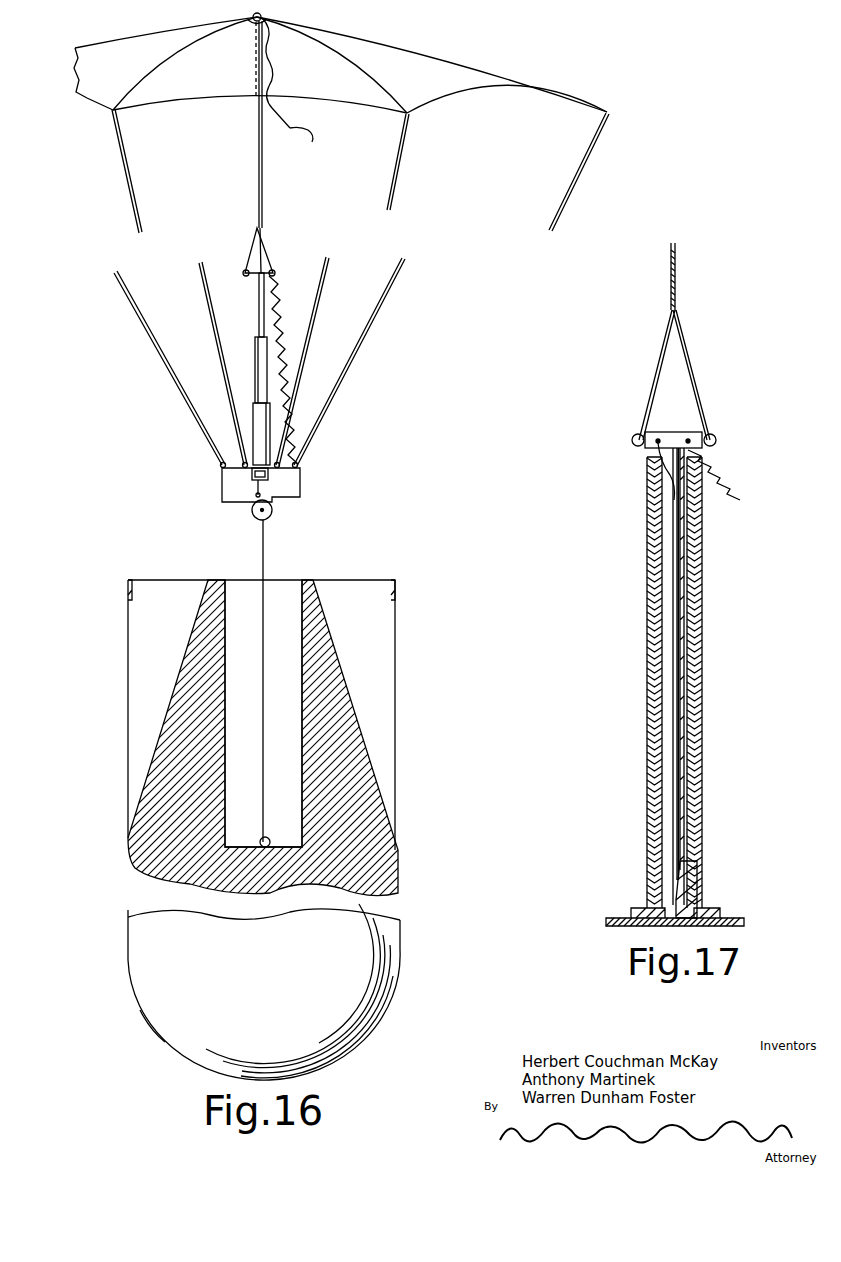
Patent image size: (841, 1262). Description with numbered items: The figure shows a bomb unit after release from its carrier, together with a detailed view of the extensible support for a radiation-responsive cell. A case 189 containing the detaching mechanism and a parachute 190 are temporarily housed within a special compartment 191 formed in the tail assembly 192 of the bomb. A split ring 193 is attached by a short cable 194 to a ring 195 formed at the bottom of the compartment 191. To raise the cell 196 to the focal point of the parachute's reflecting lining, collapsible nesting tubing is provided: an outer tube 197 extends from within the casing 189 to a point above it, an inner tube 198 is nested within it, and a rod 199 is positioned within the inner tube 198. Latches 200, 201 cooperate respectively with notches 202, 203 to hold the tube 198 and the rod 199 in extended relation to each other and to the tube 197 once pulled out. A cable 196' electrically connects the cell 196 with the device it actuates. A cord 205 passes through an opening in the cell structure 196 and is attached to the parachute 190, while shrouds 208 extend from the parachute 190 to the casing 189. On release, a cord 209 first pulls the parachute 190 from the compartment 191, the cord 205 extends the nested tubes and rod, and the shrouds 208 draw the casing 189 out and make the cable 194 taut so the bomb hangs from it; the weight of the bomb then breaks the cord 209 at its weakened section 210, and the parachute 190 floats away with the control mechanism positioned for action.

In FIG. 16, the case 189 is at (261, 485).
In FIG. 16, the parachute 190 is at (341, 123).
In FIG. 16, the compartment 191 is at (263, 713).
In FIG. 16, the tail assembly 192 is at (264, 830).
In FIG. 16, the split ring 193 is at (252, 516).
In FIG. 16, the short cable 194 is at (264, 610).
In FIG. 16, the ring 195 is at (270, 841).
In FIG. 16, the cell 196 is at (276, 252).
In FIG. 17, the cell 196 is at (674, 379).
In FIG. 16, the cable 196' is at (309, 369).
In FIG. 17, the cable 196' is at (731, 475).
In FIG. 16, the outer tube 197 is at (255, 417).
In FIG. 17, the outer tube 197 is at (702, 638).
In FIG. 16, the inner tube 198 is at (256, 353).
In FIG. 17, the inner tube 198 is at (694, 665).
In FIG. 16, the rod 199 is at (259, 300).
In FIG. 17, the rod 199 is at (674, 618).
In FIG. 17, the latch 200 is at (704, 472).
In FIG. 17, the latch 201 is at (647, 485).
In FIG. 17, the notch 202 is at (686, 899).
In FIG. 17, the notch 203 is at (661, 897).
In FIG. 16, the cord 205 is at (264, 186).
In FIG. 17, the cord 205 is at (670, 270).
In FIG. 16, the shrouds 208 is at (365, 348).
In FIG. 16, the cord 209 is at (268, 68).
In FIG. 16, the weakened section 210 is at (295, 137).